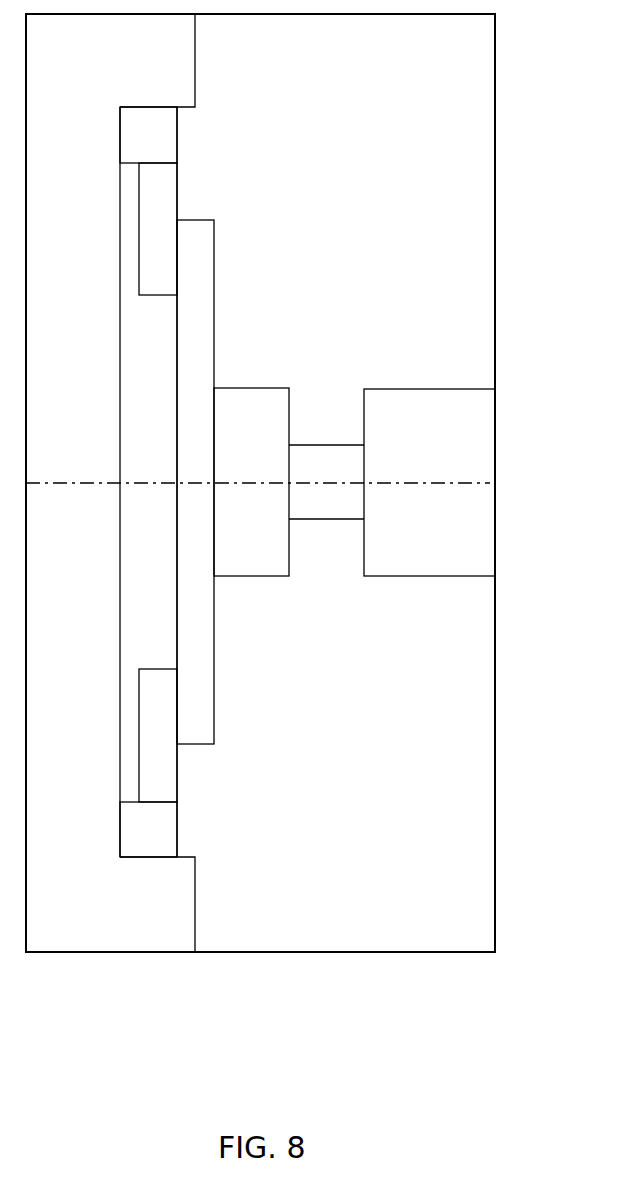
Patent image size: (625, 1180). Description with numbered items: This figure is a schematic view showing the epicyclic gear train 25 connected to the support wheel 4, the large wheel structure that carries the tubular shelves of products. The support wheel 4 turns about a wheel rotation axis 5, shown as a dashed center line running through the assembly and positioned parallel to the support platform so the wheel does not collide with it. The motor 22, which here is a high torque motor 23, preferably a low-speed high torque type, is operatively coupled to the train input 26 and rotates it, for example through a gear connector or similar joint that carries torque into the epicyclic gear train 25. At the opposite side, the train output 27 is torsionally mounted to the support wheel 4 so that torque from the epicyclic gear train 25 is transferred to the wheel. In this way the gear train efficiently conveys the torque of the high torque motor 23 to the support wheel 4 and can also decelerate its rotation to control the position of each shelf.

The support wheel 4 is at (184, 49).
The wheel rotation axis 5 is at (466, 482).
The motor 22 is at (408, 514).
The high torque motor 23 is at (422, 560).
The epicyclic gear train 25 is at (303, 217).
The train input 26 is at (268, 397).
The train output 27 is at (167, 137).